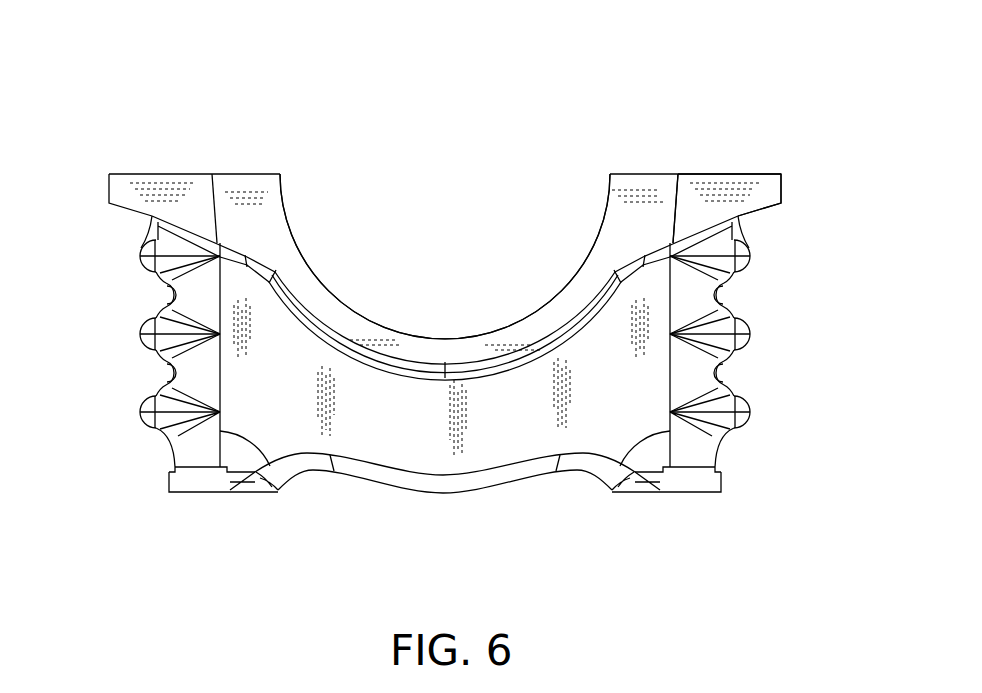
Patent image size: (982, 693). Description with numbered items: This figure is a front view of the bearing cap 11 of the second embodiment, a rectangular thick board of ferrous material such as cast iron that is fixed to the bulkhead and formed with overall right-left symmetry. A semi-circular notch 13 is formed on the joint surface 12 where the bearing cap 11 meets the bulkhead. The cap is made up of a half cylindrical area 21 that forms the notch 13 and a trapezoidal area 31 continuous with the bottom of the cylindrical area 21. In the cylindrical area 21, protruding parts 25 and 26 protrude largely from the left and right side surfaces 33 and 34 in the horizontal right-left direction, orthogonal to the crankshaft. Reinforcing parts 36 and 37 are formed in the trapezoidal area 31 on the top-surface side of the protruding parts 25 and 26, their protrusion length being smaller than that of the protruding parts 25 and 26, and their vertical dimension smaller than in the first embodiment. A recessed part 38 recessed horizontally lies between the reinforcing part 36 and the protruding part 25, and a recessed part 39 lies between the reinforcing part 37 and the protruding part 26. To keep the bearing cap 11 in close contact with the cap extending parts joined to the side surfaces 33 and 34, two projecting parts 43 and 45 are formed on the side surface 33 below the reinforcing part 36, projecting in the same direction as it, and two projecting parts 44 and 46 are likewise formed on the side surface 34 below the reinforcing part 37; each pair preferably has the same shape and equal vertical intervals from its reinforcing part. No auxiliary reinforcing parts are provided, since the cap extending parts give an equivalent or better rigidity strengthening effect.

The bearing cap 11 is at (398, 498).
The joint surface 12 is at (628, 175).
The semi-circular notch 13 is at (597, 232).
The half cylindrical area 21 is at (328, 192).
The protruding part 25 is at (127, 188).
The protruding part 26 is at (765, 185).
The trapezoidal area 31 is at (153, 453).
The side surface 33 is at (170, 372).
The side surface 34 is at (717, 373).
The reinforcing part 36 is at (150, 258).
The reinforcing part 37 is at (752, 258).
The recessed part 38 is at (147, 233).
The recessed part 39 is at (745, 233).
The projecting part 43 is at (147, 342).
The projecting part 44 is at (750, 343).
The projecting part 45 is at (141, 418).
The projecting part 46 is at (750, 425).